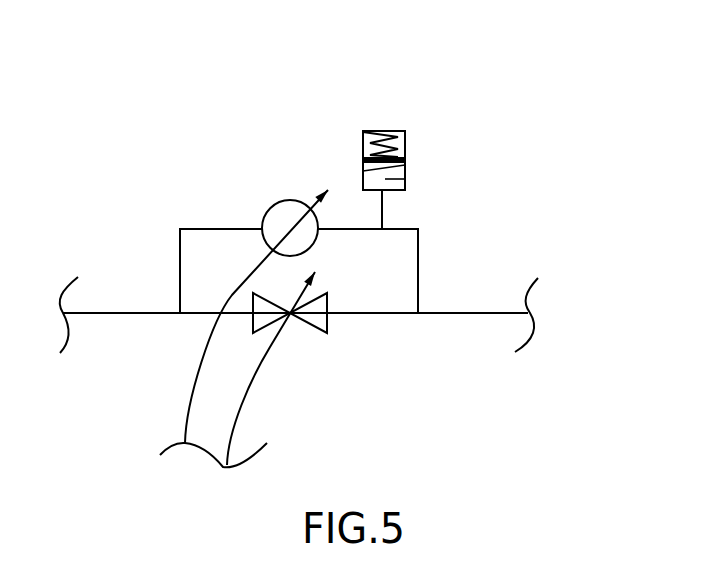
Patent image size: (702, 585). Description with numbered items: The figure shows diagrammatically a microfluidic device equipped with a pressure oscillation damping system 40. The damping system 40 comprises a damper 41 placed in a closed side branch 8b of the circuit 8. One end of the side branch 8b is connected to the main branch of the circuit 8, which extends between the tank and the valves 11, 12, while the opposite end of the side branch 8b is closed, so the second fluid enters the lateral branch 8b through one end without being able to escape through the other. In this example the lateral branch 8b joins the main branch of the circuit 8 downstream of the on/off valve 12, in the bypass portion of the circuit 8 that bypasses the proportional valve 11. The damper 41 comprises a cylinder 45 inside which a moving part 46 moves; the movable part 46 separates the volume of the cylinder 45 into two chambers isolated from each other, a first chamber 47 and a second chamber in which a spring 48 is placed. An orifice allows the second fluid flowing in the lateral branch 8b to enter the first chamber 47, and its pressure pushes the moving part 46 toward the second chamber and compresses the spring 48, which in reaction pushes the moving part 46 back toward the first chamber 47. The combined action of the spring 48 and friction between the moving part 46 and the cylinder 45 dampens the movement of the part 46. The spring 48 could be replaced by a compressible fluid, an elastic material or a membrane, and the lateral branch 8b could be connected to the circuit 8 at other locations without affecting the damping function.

The circuit 8 is at (452, 280).
The side branch 8b is at (383, 212).
The proportional valve 11 is at (327, 293).
The on/off valve 12 is at (270, 208).
The damping system 40 is at (424, 128).
The damper 41 is at (424, 131).
The cylinder 45 is at (405, 165).
The moving part 46 is at (363, 170).
The first chamber 47 is at (405, 179).
The spring 48 is at (375, 131).